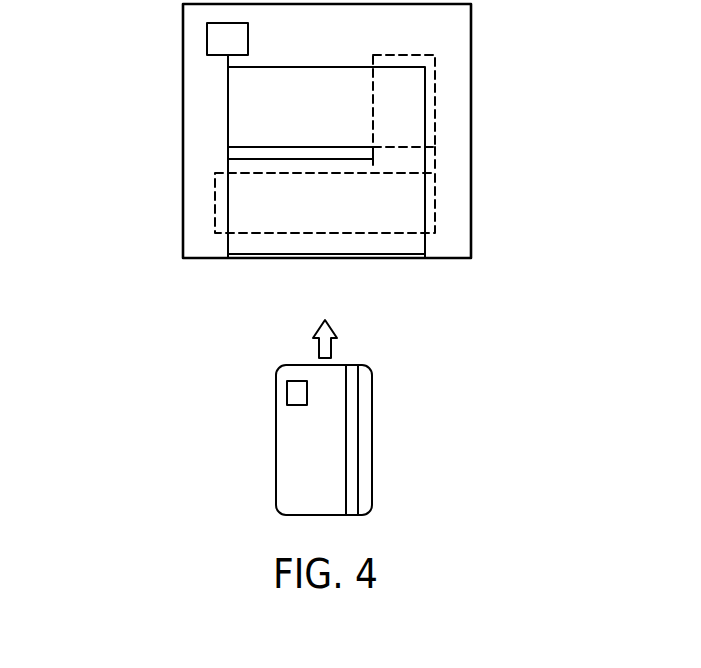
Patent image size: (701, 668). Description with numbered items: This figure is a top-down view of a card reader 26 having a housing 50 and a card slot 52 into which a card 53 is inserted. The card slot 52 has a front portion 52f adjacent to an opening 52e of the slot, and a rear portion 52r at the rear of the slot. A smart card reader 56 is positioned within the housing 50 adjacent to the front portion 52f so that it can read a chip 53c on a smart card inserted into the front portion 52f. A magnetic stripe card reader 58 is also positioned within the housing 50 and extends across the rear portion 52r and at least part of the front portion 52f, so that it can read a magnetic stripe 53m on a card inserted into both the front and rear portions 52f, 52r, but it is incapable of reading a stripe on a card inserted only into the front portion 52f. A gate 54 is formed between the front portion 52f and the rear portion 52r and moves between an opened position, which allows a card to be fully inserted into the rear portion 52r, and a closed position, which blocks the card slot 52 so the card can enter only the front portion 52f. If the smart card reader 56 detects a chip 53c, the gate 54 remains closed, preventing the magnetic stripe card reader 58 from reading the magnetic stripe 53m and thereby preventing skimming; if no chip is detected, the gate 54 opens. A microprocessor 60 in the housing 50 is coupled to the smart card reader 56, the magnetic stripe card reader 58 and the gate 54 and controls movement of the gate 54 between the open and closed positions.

The card reader 26 is at (118, 45).
The housing 50 is at (471, 43).
The card slot 52 is at (396, 268).
The opening 52e is at (290, 258).
The rear portion 52r is at (200, 75).
The front portion 52f is at (200, 168).
The card 53 is at (372, 411).
The chip 53c is at (287, 383).
The magnetic stripe 53m is at (358, 460).
The gate 54 is at (228, 147).
The smart card reader 56 is at (435, 208).
The magnetic stripe card reader 58 is at (435, 147).
The microprocessor 60 is at (236, 51).